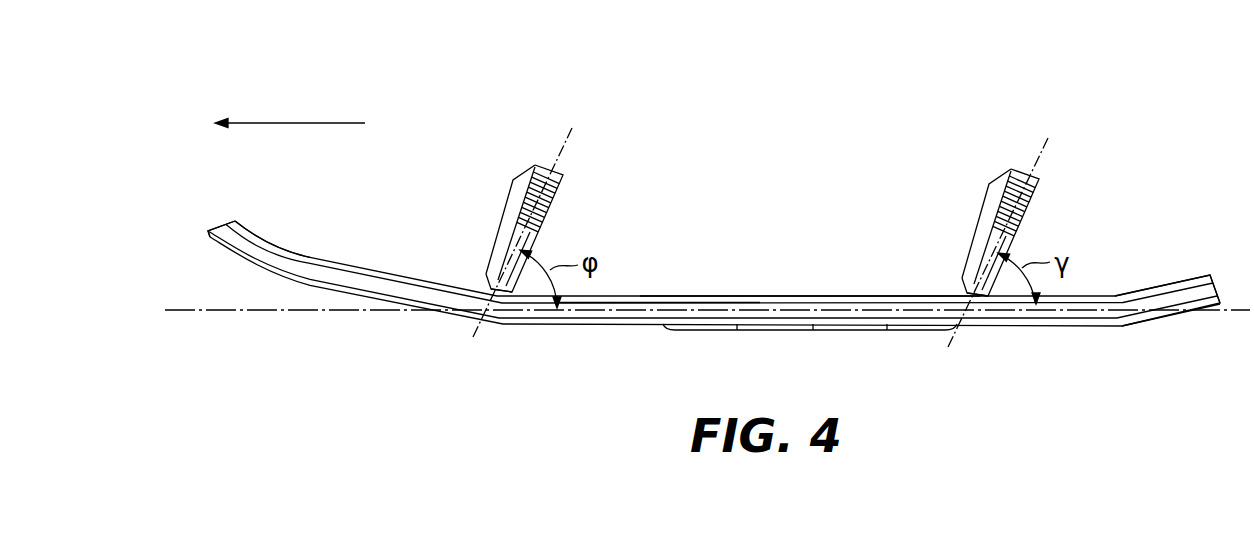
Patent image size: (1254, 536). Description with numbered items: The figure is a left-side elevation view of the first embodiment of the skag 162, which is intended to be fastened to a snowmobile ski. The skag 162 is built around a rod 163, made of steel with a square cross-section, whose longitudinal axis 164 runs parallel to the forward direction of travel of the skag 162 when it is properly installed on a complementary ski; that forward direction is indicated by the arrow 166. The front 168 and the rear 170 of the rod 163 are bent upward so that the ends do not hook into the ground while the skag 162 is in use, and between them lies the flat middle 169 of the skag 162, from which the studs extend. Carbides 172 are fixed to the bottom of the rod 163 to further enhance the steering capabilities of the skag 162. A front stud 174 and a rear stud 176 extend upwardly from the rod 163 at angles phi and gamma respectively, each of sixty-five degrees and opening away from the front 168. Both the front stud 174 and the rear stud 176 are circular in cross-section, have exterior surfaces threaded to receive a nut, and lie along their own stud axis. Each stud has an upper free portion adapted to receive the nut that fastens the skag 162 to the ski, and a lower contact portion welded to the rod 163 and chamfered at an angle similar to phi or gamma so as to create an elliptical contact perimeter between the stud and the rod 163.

The skag 162 is at (738, 213).
The rod 163 is at (805, 300).
The longitudinal axis 164 is at (280, 311).
The arrow 166 is at (291, 121).
The front 168 is at (287, 268).
The flat middle 169 is at (654, 285).
The rear 170 is at (1182, 298).
The carbides 172 is at (866, 331).
The front stud 174 is at (550, 205).
The rear stud 176 is at (978, 252).